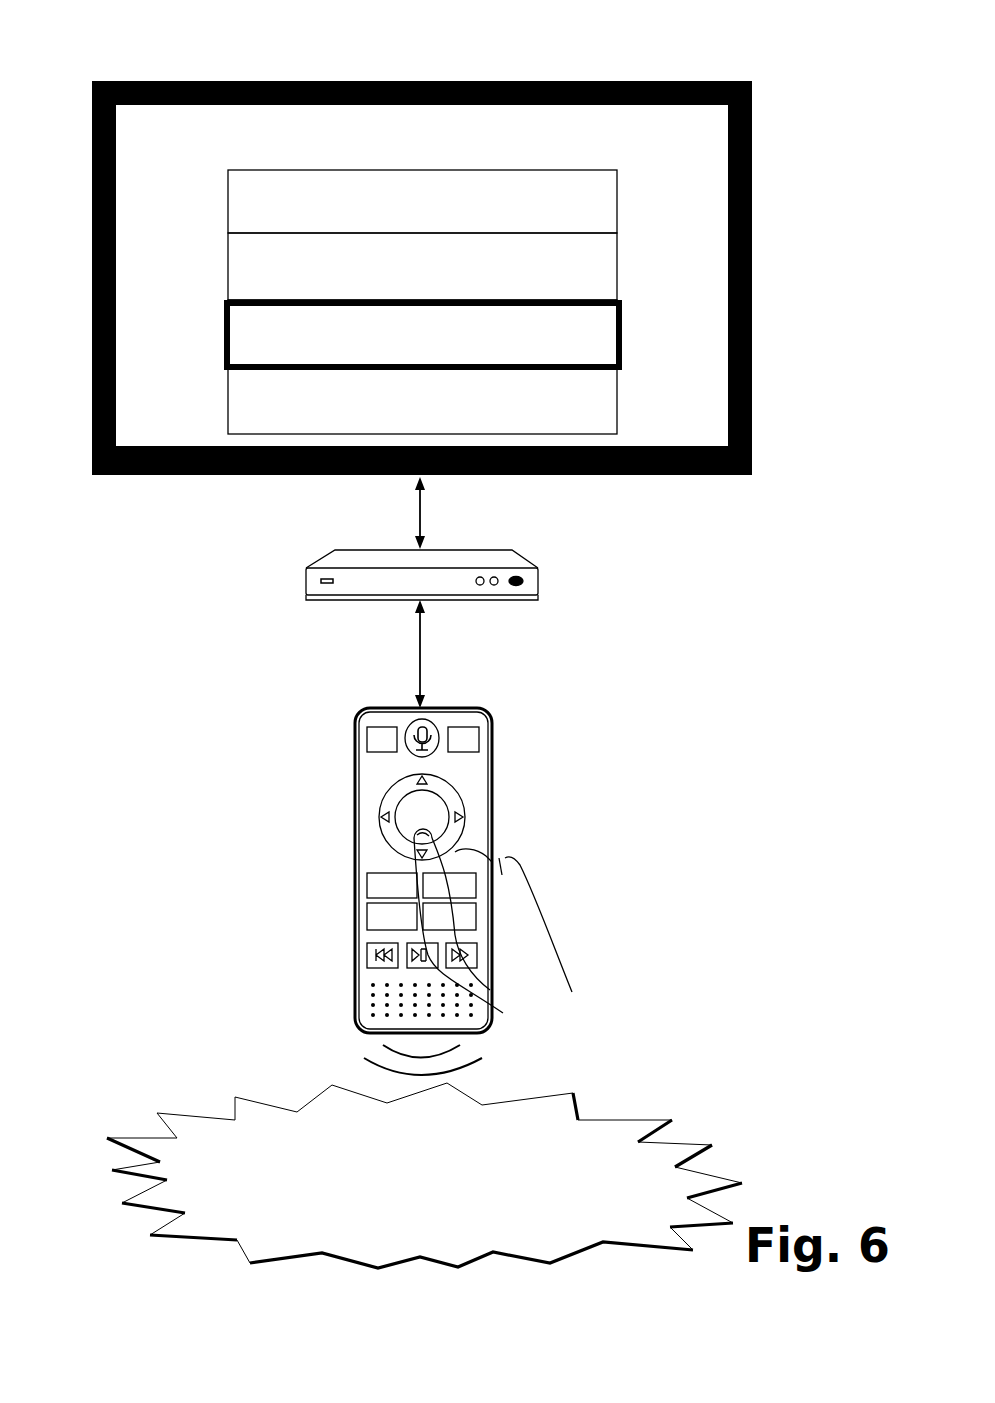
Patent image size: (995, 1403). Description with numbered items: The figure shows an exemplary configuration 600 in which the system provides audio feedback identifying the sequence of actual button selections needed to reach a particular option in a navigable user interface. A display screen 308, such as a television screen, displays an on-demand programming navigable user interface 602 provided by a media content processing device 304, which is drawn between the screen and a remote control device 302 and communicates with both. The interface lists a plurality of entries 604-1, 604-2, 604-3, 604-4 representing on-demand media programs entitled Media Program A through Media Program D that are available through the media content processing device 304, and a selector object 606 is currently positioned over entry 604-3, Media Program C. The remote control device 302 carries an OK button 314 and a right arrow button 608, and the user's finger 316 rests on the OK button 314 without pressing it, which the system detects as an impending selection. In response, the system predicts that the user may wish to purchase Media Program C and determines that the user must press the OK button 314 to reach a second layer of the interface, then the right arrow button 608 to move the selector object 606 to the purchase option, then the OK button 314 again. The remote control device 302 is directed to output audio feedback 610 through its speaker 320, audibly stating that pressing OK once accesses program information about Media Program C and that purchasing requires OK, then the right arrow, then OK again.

The configuration 600 is at (86, 79).
The display screen 308 is at (752, 112).
The on-demand programming navigable user interface 602 is at (218, 152).
The entry 604-1 is at (617, 197).
The entry 604-2 is at (617, 262).
The entry 604-3 is at (622, 332).
The entry 604-4 is at (617, 397).
The selector object 606 is at (224, 333).
The media content processing device 304 is at (538, 583).
The remote control device 302 is at (488, 718).
The OK button 314 is at (440, 803).
The right arrow button 608 is at (465, 817).
The finger 316 is at (415, 832).
The speaker 320 is at (355, 978).
The audio feedback 610 is at (573, 1093).